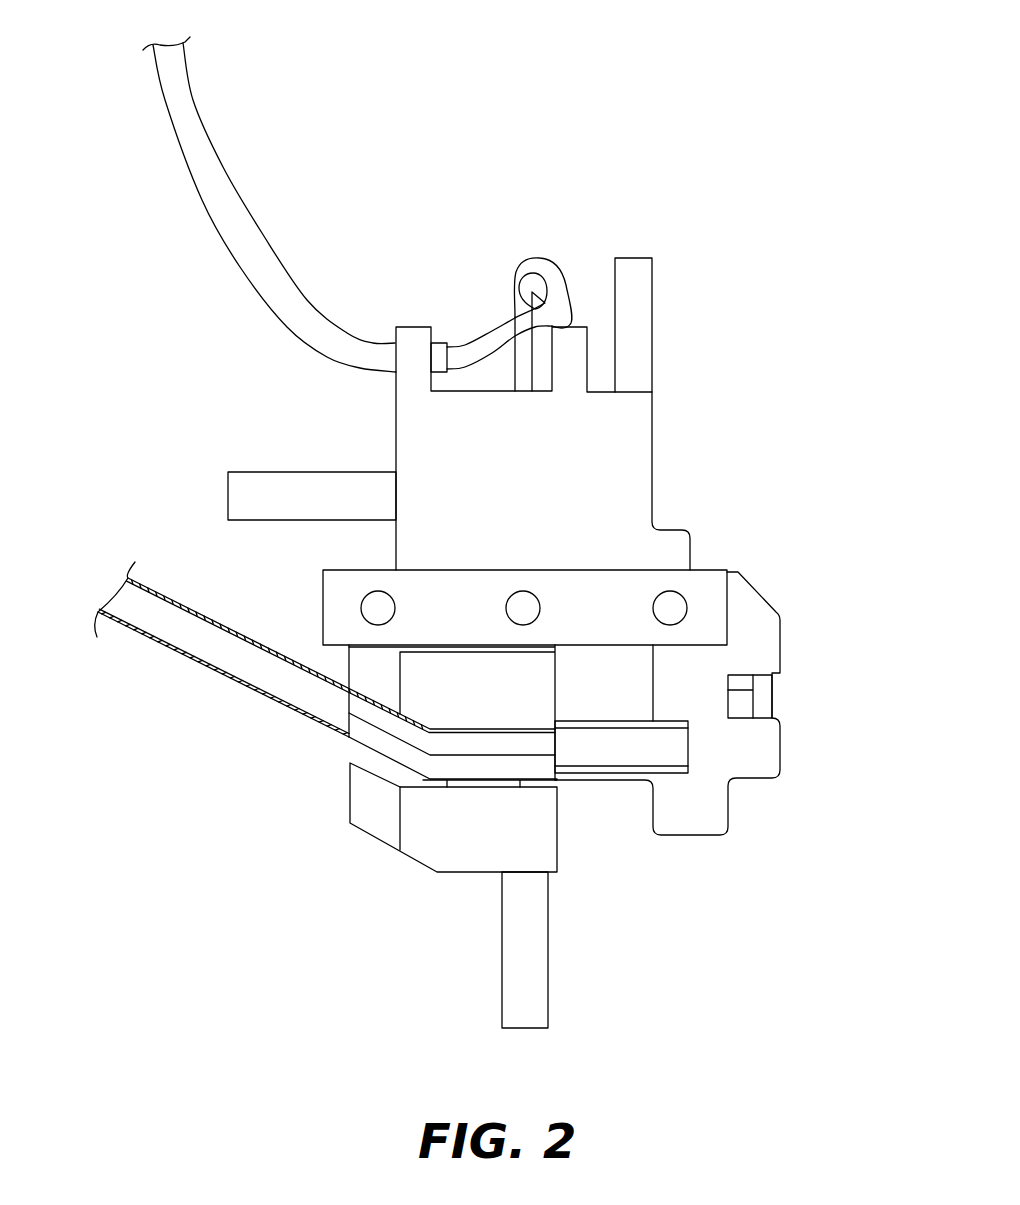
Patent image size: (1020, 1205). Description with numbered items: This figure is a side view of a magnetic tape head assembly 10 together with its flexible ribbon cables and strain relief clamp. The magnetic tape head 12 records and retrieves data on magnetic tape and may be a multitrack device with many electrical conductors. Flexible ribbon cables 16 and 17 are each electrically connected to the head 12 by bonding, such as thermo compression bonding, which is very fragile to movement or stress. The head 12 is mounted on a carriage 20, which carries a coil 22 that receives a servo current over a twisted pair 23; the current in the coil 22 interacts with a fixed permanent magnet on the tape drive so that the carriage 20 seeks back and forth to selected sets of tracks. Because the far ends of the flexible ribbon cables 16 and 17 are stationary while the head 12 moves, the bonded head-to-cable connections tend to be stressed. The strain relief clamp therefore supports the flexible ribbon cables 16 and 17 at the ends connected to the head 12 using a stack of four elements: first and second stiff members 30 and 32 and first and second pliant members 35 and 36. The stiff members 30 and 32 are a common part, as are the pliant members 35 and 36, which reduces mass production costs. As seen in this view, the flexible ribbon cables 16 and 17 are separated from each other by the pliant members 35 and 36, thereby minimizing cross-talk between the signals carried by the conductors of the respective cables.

The magnetic tape head assembly 10 is at (812, 214).
The magnetic tape head 12 is at (773, 698).
The flexible ribbon cable 16 is at (153, 640).
The flexible ribbon cable 17 is at (170, 595).
The carriage 20 is at (396, 422).
The coil 22 is at (548, 968).
The twisted pair 23 is at (237, 206).
The first stiff member 30 is at (557, 690).
The second stiff member 32 is at (557, 852).
The first pliant member 35 is at (410, 720).
The second pliant member 36 is at (352, 752).